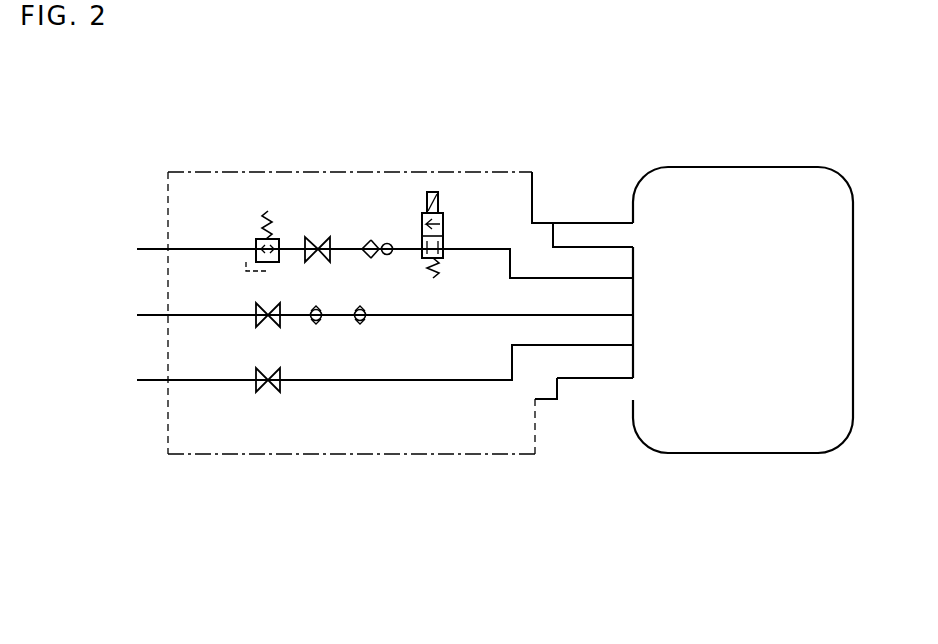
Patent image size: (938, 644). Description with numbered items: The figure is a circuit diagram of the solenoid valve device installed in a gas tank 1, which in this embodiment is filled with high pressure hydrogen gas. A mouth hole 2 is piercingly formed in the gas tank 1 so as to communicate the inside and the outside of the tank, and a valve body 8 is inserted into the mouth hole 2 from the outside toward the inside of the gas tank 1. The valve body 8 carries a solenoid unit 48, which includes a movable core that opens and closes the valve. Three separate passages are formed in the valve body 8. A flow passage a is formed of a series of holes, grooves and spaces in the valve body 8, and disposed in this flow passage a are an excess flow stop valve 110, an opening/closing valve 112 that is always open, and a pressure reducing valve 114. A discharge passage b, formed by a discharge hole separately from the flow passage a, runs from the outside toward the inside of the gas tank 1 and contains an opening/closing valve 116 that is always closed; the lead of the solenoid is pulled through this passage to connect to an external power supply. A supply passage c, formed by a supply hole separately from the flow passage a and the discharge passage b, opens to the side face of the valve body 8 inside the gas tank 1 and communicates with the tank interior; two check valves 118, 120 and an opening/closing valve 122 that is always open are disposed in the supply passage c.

The gas tank 1 is at (688, 167).
The mouth hole 2 is at (585, 258).
The valve body 8 is at (482, 187).
The solenoid unit 48 is at (440, 205).
The excess flow stop valve 110 is at (366, 240).
The opening/closing valve 112 is at (316, 237).
The pressure reducing valve 114 is at (262, 238).
The opening/closing valve 116 is at (258, 392).
The check valve 118 is at (362, 321).
The check valve 120 is at (318, 321).
The opening/closing valve 122 is at (258, 328).
The flow passage a is at (207, 248).
The discharge passage b is at (487, 381).
The supply passage c is at (204, 316).